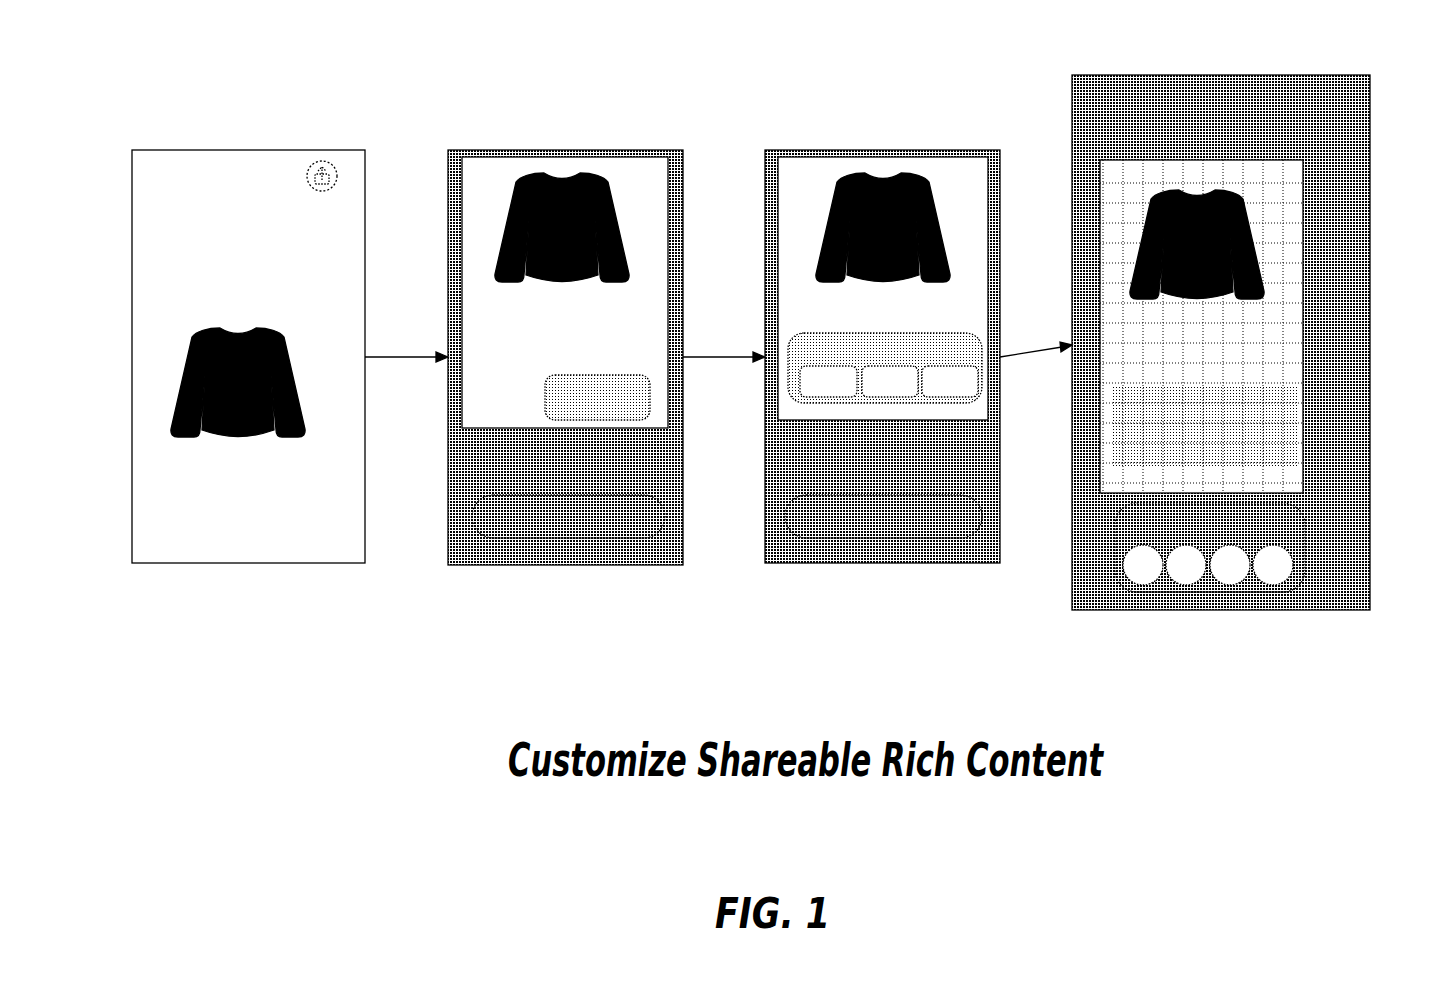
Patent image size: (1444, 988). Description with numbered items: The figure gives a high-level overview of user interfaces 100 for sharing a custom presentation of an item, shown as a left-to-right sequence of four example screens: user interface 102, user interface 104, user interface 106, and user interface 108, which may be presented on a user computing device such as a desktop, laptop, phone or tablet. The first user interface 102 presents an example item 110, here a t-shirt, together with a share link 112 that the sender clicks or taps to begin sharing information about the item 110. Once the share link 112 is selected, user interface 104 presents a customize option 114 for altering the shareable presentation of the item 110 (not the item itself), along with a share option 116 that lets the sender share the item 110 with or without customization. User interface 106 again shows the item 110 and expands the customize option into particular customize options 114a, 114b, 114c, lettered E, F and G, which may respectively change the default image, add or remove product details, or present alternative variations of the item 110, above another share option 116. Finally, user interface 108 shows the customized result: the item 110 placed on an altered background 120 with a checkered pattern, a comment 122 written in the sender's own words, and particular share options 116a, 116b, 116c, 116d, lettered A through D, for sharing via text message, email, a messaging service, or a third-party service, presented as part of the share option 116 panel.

The user interfaces 100 is at (705, 62).
The user interface 102 is at (228, 565).
The user interface 104 is at (548, 568).
The user interface 106 is at (882, 375).
The user interface 108 is at (1218, 612).
The item 110 is at (232, 446).
The share link 112 is at (330, 190).
The customize option 114 is at (650, 393).
The customize option 114a is at (822, 397).
The customize option 114b is at (888, 397).
The customize option 114c is at (953, 397).
The share option 116 is at (957, 564).
The share option 116a is at (1125, 564).
The share option 116b is at (1172, 578).
The share option 116c is at (1233, 545).
The share option 116d is at (1293, 563).
The background 120 is at (1292, 287).
The comment 122 is at (1287, 465).